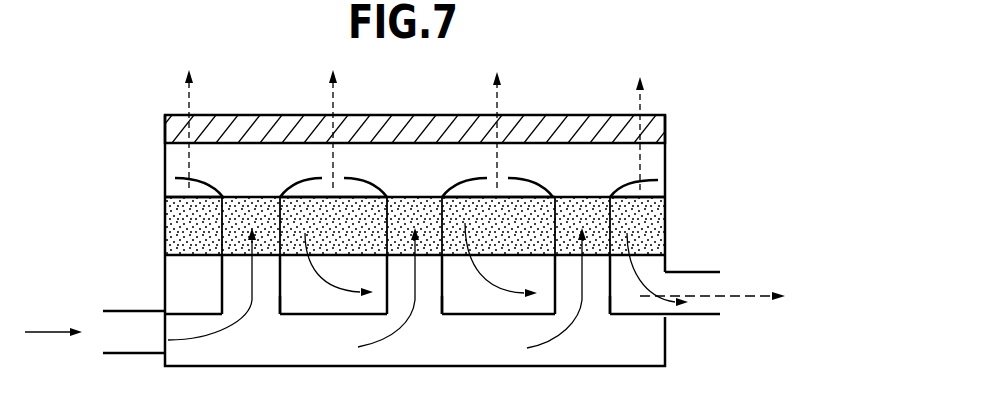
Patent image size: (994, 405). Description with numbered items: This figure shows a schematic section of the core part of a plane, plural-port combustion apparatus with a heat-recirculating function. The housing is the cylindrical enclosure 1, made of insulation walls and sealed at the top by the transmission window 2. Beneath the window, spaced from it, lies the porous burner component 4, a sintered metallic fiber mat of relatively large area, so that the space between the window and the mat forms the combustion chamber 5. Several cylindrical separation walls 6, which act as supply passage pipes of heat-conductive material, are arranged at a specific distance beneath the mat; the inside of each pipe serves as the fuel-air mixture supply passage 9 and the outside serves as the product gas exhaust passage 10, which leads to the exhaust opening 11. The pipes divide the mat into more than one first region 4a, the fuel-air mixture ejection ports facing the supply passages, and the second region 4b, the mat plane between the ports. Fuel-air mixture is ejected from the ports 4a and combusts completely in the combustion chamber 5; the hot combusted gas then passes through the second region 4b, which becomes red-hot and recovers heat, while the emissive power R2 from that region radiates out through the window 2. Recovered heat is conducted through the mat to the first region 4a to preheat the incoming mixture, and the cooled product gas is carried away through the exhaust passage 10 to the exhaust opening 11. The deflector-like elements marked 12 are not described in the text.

The cylindrical enclosure 1 is at (667, 163).
The transmission window 2 is at (433, 116).
The porous burner component 4 is at (663, 234).
The first region 4a is at (265, 198).
The second region 4b is at (415, 222).
The combustion chamber 5 is at (262, 156).
The cylindrical separation wall 6 is at (277, 288).
The fuel-air mixture supply passage 9 is at (389, 288).
The product gas exhaust passage 10 is at (475, 268).
The exhaust opening 11 is at (715, 308).
The deflectors 12 is at (530, 192).
The emissive power R2 is at (186, 103).